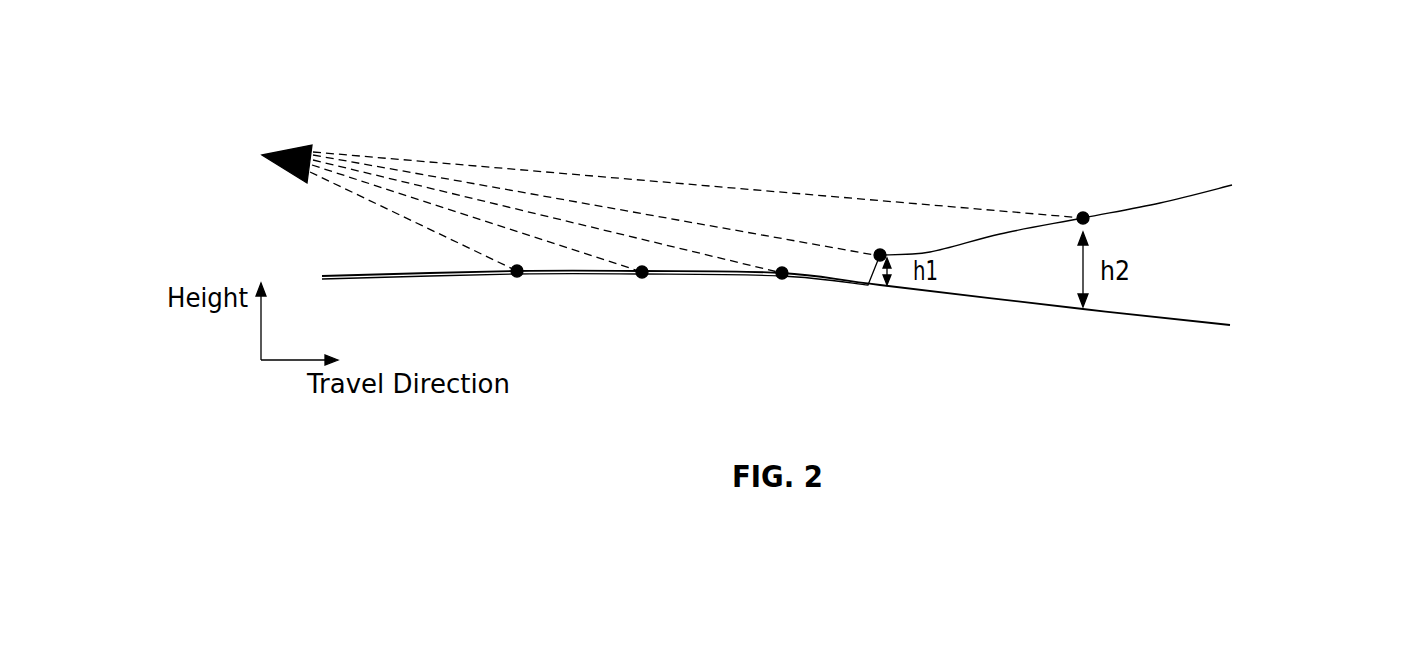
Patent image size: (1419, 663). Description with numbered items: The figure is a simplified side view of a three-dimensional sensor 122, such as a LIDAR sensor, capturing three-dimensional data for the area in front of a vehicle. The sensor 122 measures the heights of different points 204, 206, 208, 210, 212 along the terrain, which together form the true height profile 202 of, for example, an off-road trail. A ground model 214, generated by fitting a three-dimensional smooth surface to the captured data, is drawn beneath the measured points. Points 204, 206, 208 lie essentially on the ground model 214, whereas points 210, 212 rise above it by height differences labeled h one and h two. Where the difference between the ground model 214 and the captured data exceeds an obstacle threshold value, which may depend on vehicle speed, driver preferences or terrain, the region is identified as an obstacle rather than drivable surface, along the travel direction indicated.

The three-dimensional sensor 122 is at (305, 142).
The true height profile 202 is at (1253, 107).
The point 204 is at (515, 277).
The point 206 is at (641, 278).
The point 208 is at (781, 279).
The point 210 is at (881, 249).
The point 212 is at (1081, 213).
The ground model 214 is at (1212, 378).